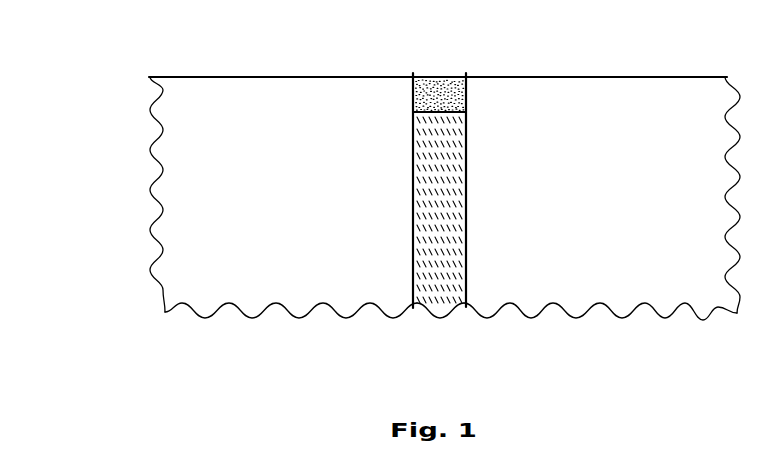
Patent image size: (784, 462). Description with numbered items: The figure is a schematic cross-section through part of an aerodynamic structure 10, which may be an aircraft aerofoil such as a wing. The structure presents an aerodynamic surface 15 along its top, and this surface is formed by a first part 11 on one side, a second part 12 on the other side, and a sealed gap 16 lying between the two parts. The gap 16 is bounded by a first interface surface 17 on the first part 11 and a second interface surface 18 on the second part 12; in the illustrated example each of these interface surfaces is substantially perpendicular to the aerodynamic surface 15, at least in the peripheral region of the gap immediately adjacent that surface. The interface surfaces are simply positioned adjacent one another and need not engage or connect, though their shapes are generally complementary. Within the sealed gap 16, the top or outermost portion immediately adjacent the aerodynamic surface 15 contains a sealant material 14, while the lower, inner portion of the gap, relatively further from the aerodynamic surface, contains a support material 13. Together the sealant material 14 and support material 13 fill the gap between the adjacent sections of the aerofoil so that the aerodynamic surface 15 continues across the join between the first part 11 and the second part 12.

The aerodynamic structure 10 is at (376, 195).
The first part 11 is at (295, 228).
The second part 12 is at (619, 224).
The support material 13 is at (445, 201).
The sealant material 14 is at (445, 100).
The aerodynamic surface 15 is at (263, 76).
The sealed gap 16 is at (466, 73).
The first interface surface 17 is at (413, 184).
The second interface surface 18 is at (466, 173).